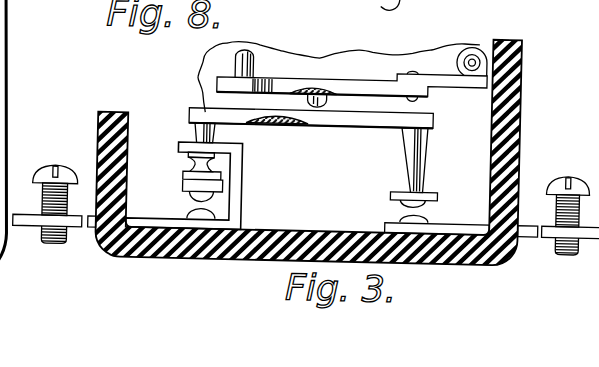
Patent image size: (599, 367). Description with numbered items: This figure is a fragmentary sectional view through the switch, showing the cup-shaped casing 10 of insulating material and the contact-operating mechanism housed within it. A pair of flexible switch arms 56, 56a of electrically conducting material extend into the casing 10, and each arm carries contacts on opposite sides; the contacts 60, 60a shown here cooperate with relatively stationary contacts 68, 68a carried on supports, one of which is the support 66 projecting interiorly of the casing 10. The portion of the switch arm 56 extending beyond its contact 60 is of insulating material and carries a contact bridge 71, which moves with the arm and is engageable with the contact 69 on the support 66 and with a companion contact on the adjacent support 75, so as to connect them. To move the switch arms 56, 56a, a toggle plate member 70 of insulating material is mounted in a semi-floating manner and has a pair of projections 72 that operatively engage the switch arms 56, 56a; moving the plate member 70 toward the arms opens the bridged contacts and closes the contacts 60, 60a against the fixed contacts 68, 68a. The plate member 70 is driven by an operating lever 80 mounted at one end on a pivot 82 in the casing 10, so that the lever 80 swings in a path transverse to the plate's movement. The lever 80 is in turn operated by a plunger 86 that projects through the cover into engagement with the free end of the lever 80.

The cup-shaped casing 10 is at (519, 68).
The flexible switch arm 56 is at (184, 178).
The flexible switch arm 56a is at (402, 189).
The contact 60 is at (183, 196).
The contact 60a is at (403, 200).
The support 66 is at (593, 232).
The fixed contact 68 is at (187, 215).
The fixed contact 68a is at (398, 214).
The contact 69 is at (185, 116).
The toggle plate member 70 is at (201, 75).
The contact bridge 71 is at (182, 158).
The projections 72 is at (214, 132).
The support 75 is at (242, 199).
The operating lever 80 is at (358, 84).
The pivot 82 is at (470, 45).
The plunger 86 is at (244, 52).